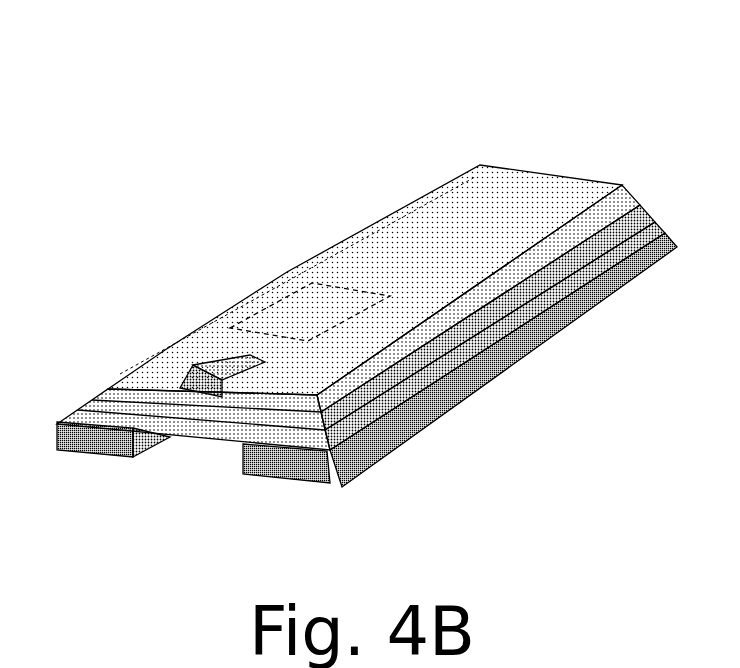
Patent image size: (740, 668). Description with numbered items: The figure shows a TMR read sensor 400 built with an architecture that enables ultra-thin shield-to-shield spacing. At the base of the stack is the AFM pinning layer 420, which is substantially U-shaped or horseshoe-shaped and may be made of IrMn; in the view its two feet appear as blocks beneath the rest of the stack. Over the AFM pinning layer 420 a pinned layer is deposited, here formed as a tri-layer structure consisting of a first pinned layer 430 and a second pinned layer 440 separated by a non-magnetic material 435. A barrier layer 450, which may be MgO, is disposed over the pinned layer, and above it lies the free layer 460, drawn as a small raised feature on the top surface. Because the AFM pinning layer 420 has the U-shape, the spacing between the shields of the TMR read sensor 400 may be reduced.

The TMR read sensor 400 is at (488, 106).
The AFM pinning layer 420 is at (103, 466).
The first pinned layer 430 is at (350, 420).
The non-magnetic material 435 is at (417, 365).
The second pinned layer 440 is at (483, 298).
The barrier layer 450 is at (537, 233).
The free layer 460 is at (223, 378).